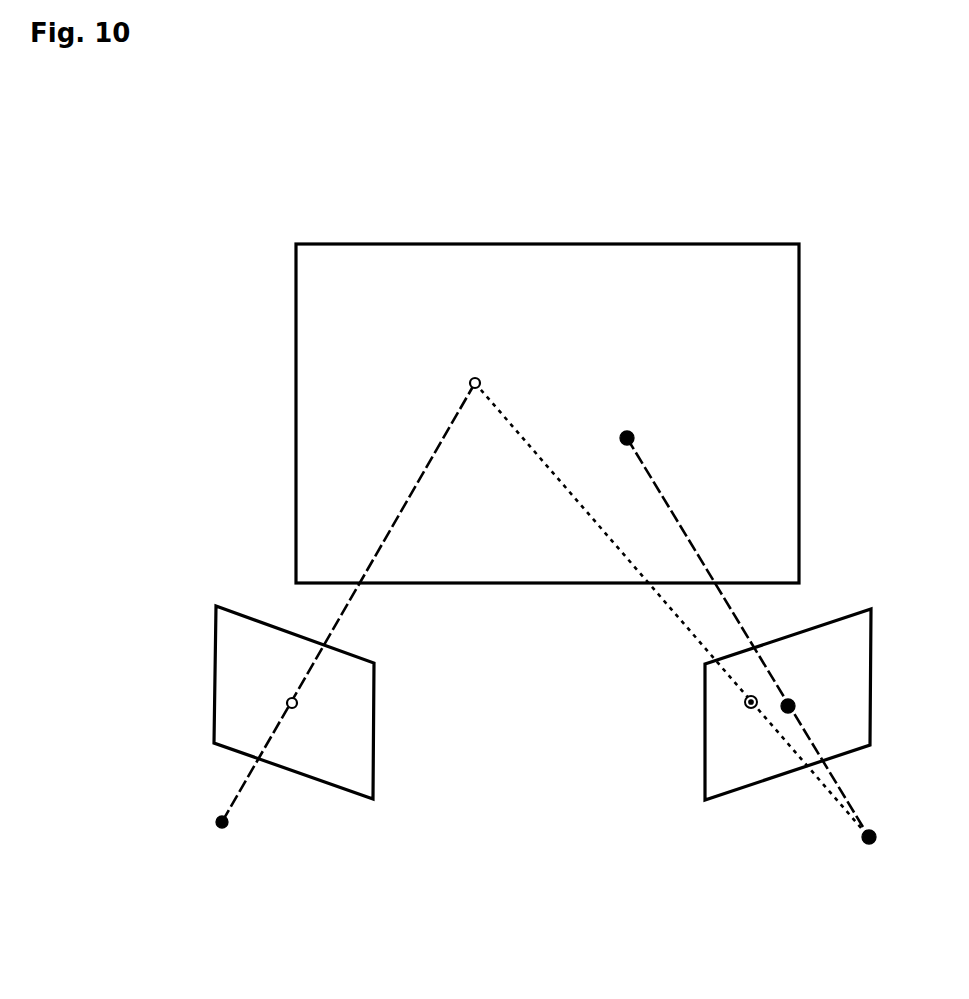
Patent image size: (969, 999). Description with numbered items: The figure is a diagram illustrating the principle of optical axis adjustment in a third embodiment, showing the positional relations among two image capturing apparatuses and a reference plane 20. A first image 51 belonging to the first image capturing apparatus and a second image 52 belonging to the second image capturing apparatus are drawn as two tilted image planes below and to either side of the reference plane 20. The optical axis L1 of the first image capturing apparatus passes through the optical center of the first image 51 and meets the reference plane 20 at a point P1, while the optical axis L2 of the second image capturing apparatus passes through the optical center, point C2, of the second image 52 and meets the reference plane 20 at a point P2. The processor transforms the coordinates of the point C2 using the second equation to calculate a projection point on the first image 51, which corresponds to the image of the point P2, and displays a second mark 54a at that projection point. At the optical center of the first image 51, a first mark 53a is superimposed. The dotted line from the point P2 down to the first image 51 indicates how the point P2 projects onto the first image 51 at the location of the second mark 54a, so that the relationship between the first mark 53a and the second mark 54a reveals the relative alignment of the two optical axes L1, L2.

The reference plane 20 is at (638, 244).
The first image 51 is at (703, 760).
The second image 52 is at (373, 743).
The first mark 53a is at (793, 698).
The second mark 54a is at (745, 702).
The optical axis of the first image capturing apparatus L1 is at (688, 538).
The optical axis of the second image capturing apparatus L2 is at (400, 517).
The meeting point of the first optical axis and the reference plane P1 is at (626, 422).
The meeting point of the second optical axis and the reference plane P2 is at (474, 368).
The optical center of the second image C2 is at (274, 685).